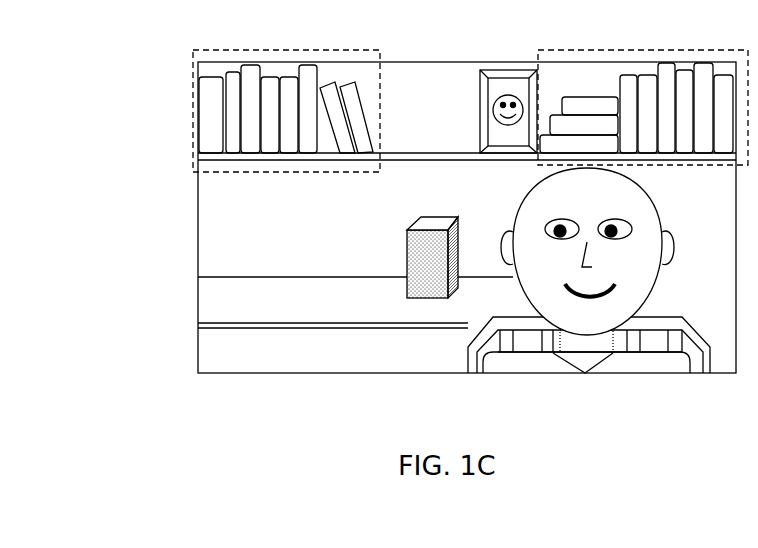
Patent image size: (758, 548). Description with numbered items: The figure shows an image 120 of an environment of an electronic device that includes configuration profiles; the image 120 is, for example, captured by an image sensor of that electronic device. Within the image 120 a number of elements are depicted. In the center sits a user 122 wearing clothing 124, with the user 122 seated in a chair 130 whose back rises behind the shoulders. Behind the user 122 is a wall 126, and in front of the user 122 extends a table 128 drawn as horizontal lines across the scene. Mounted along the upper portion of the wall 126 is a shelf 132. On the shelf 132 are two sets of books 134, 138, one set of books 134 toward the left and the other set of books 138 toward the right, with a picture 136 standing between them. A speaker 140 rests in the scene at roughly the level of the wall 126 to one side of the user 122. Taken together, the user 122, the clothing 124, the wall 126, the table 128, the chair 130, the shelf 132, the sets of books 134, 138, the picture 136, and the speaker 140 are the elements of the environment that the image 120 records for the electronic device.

The image 120 is at (198, 352).
The user 122 is at (662, 285).
The clothing 124 is at (643, 363).
The wall 126 is at (233, 197).
The table 128 is at (233, 300).
The chair 130 is at (470, 372).
The shelf 132 is at (423, 160).
The set of books 134 is at (204, 48).
The picture 136 is at (480, 112).
The set of books 138 is at (685, 48).
The speaker 140 is at (407, 248).